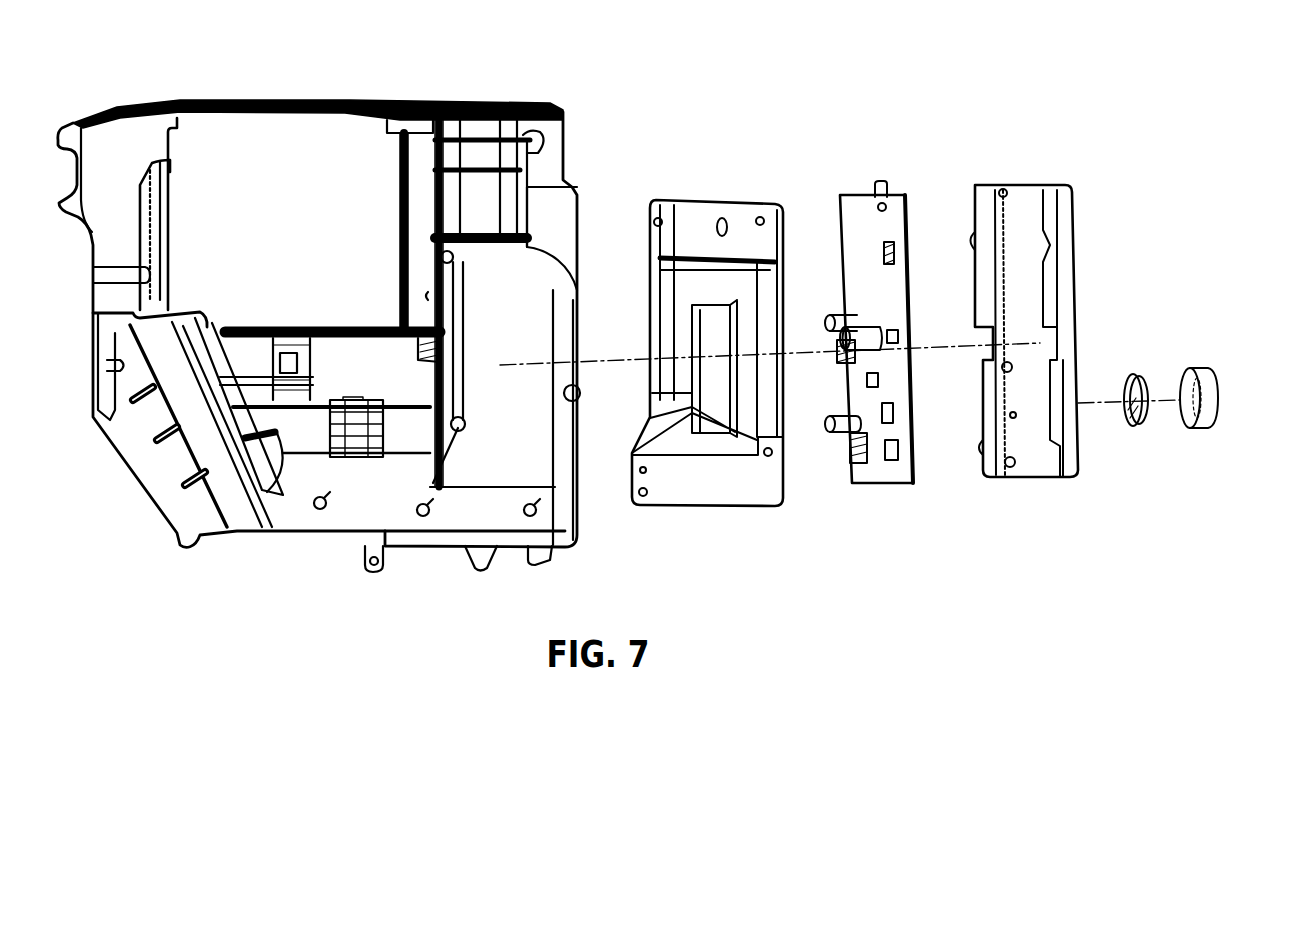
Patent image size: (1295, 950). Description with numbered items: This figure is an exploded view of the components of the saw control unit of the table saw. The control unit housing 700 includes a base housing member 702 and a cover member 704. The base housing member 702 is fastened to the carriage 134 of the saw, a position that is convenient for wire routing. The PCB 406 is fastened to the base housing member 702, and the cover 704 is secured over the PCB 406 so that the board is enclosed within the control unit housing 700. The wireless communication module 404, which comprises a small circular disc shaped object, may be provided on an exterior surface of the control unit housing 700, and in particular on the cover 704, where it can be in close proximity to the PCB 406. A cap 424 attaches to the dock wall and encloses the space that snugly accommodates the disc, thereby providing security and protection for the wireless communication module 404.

The carriage 134 is at (562, 108).
The control unit housing 700 is at (1083, 530).
The base housing member 702 is at (735, 205).
The PCB 406 is at (858, 195).
The cover member 704 is at (1002, 187).
The wireless communication module 404 is at (1137, 375).
The cap 424 is at (1213, 367).